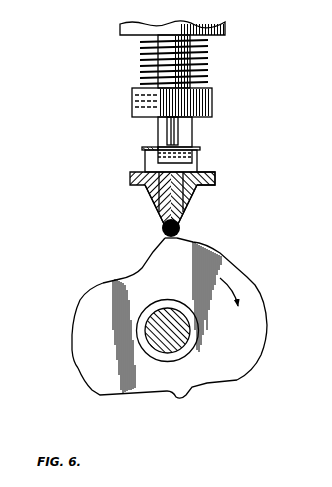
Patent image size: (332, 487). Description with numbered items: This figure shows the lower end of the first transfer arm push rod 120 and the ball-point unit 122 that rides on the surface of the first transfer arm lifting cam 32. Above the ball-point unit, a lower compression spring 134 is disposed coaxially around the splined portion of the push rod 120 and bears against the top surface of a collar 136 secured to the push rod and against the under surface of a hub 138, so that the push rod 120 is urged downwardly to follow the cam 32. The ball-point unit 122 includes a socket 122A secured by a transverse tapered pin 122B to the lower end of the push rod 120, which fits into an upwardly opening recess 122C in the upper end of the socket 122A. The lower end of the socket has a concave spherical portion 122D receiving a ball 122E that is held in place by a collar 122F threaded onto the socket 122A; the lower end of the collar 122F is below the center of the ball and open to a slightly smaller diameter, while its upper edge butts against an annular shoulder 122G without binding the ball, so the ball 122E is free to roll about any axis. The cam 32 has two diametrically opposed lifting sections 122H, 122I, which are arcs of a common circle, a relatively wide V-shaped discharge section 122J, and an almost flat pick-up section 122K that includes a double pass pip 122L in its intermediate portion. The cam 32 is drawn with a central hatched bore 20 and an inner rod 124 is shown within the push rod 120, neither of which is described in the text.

The hub 138 is at (226, 28).
The lower compression spring 134 is at (200, 44).
The collar 136 is at (212, 100).
The first transfer arm push rod 120 is at (157, 122).
The inner rod 124 is at (180, 126).
The ball-point unit 122 is at (145, 198).
The socket 122A is at (143, 161).
The transverse tapered pin 122B is at (198, 152).
The upwardly opening recess 122C is at (158, 133).
The concave spherical portion 122D is at (160, 229).
The ball 122E is at (181, 237).
The collar 122F is at (193, 193).
The annular shoulder 122G is at (213, 175).
The lifting section 122H is at (262, 308).
The lifting section 122I is at (73, 360).
The V-shaped discharge section 122J is at (115, 280).
The pick-up section 122K is at (103, 397).
The double pass pip 122L is at (193, 395).
The shaft bore 20 is at (155, 327).
The first transfer arm lifting cam 32 is at (271, 326).